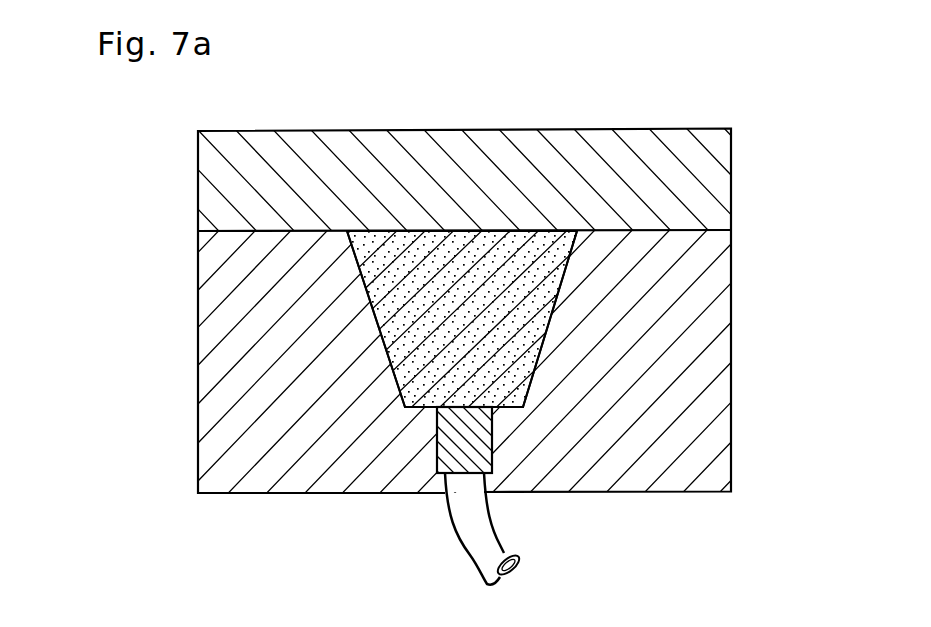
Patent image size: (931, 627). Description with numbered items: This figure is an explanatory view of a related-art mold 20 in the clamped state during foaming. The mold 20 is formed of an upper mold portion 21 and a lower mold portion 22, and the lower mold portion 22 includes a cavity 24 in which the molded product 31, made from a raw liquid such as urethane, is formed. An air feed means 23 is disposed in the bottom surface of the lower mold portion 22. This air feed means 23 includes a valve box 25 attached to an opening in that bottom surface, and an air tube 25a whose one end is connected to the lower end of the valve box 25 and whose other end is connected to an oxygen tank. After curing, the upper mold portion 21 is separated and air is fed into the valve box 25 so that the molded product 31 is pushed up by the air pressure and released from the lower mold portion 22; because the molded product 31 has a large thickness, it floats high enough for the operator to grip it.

The mold 20 is at (756, 179).
The upper mold portion 21 is at (712, 128).
The lower mold portion 22 is at (732, 337).
The air feed means 23 is at (437, 512).
The cavity 24 is at (352, 247).
The valve box 25 is at (492, 458).
The air tube 25a is at (458, 548).
The molded product 31 is at (481, 229).